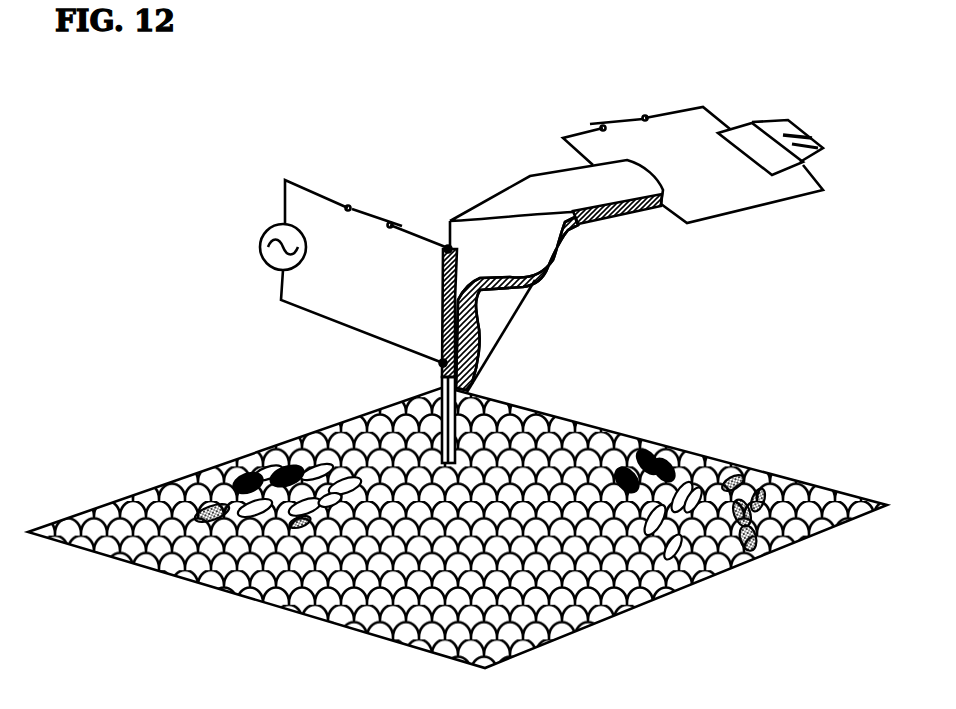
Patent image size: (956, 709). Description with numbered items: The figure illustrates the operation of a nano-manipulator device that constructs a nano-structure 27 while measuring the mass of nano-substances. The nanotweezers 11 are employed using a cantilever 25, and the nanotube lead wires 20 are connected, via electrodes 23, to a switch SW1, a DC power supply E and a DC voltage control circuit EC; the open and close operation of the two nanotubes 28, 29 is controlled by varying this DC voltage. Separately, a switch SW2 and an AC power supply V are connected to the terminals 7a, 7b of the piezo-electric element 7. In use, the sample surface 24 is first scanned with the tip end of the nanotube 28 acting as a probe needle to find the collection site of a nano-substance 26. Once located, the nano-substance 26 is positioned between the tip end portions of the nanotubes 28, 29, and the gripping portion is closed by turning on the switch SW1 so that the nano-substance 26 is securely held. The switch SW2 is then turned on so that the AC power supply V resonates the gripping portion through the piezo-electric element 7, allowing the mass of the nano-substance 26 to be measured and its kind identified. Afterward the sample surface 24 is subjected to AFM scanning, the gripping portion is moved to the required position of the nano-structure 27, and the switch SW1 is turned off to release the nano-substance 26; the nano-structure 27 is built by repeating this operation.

The nanotweezers 11 is at (483, 167).
The piezo-electric element 7 is at (441, 305).
The terminal 7a is at (448, 245).
The terminal 7b is at (440, 365).
The nanotube lead wires 20 is at (527, 290).
The electrodes 23 is at (607, 217).
The sample surface 24 is at (343, 608).
The cantilever 25 is at (562, 182).
The nano-substance 26 is at (357, 423).
The nano-structure 27 is at (225, 487).
The nanotube 28 is at (447, 400).
The nanotube 29 is at (512, 336).
The switch SW1 is at (630, 120).
The switch SW2 is at (372, 215).
The AC power supply V is at (259, 253).
The DC voltage control circuit EC is at (743, 140).
The DC power supply E is at (808, 133).